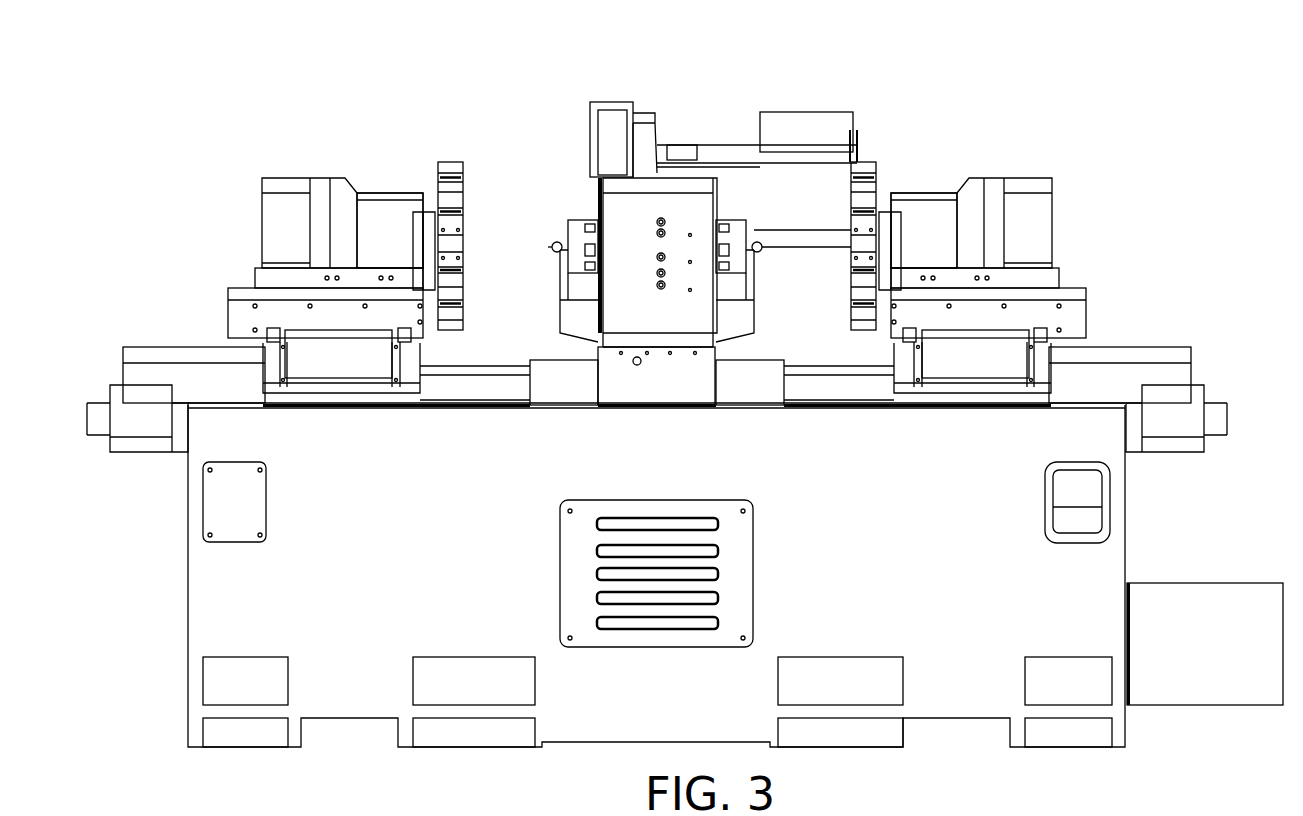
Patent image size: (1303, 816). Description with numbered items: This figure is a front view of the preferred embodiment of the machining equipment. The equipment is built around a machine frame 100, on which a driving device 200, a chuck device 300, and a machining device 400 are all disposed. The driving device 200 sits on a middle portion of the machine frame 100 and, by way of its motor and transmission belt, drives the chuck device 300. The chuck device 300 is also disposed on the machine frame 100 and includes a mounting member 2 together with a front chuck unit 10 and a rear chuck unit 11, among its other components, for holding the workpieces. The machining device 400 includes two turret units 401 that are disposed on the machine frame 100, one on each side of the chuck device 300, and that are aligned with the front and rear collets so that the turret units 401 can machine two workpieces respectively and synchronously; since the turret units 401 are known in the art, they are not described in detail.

The machine frame 100 is at (1130, 512).
The driving device 200 is at (687, 138).
The chuck device 300 is at (593, 195).
The machining device 400 is at (316, 148).
The turret unit 401 is at (388, 203).
The mounting member 2 is at (697, 207).
The front chuck unit 10 is at (578, 238).
The rear chuck unit 11 is at (737, 235).